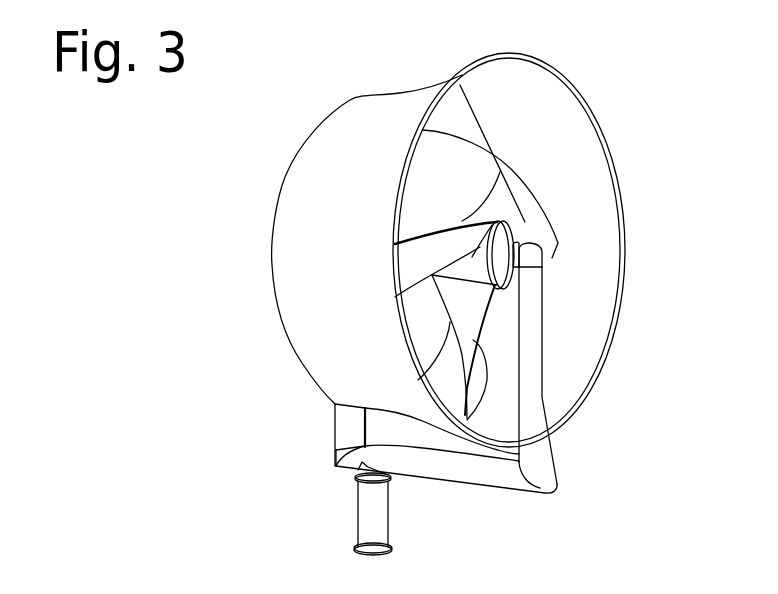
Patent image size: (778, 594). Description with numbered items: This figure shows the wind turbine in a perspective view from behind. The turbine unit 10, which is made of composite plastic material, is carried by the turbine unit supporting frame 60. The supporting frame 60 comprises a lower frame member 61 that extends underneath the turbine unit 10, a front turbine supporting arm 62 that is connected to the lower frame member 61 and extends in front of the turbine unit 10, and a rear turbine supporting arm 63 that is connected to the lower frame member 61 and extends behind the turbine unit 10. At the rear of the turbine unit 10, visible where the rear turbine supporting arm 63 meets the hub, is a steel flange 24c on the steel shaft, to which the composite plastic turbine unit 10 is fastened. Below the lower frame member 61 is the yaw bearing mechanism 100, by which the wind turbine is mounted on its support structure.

The turbine unit 10 is at (623, 122).
The steel flange 24c is at (518, 237).
The turbine unit supporting frame 60 is at (565, 455).
The lower frame member 61 is at (453, 467).
The front turbine supporting arm 62 is at (352, 423).
The rear turbine supporting arm 63 is at (533, 358).
The yaw bearing mechanism 100 is at (357, 508).